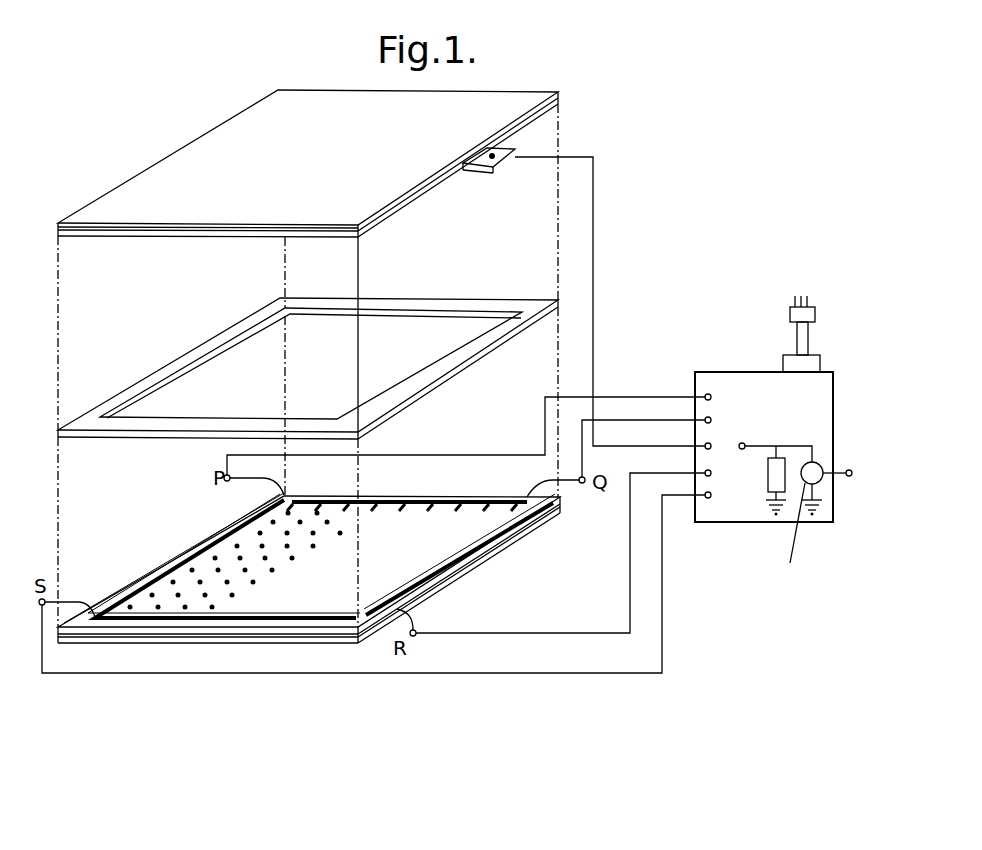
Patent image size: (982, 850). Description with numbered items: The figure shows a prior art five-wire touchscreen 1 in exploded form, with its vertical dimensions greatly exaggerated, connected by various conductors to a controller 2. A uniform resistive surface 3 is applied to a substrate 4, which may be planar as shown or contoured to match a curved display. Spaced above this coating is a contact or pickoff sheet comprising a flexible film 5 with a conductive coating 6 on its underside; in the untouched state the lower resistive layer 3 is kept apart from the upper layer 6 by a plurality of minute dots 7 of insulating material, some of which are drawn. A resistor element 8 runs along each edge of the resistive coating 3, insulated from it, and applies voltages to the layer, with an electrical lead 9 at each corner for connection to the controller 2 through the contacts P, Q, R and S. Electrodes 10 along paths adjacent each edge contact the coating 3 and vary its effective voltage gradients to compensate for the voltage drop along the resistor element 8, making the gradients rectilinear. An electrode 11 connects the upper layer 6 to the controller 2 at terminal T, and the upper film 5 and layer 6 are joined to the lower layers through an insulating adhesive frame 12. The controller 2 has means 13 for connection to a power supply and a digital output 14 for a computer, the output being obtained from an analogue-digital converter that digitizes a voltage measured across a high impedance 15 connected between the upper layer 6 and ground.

The touchscreen 1 is at (637, 140).
The controller 2 is at (738, 348).
The uniform resistive surface 3 is at (394, 551).
The substrate 4 is at (133, 640).
The flexible film 5 is at (131, 179).
The conductive coating 6 is at (80, 228).
The dots 7 is at (220, 572).
The resistor element 8 is at (224, 627).
The electrical lead 9 is at (80, 602).
The electrodes 10 is at (388, 503).
The electrode 11 is at (505, 160).
The insulating adhesive frame 12 is at (162, 377).
The power supply connecting means 13 is at (815, 312).
The digital output 14 is at (849, 480).
The high impedance 15 is at (766, 486).